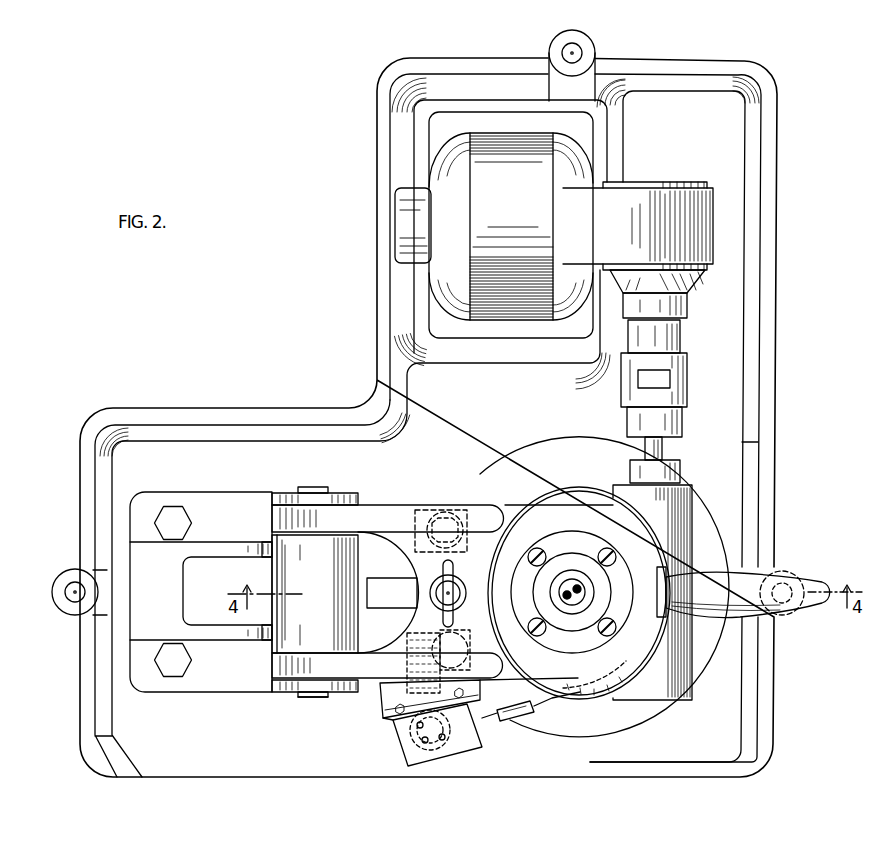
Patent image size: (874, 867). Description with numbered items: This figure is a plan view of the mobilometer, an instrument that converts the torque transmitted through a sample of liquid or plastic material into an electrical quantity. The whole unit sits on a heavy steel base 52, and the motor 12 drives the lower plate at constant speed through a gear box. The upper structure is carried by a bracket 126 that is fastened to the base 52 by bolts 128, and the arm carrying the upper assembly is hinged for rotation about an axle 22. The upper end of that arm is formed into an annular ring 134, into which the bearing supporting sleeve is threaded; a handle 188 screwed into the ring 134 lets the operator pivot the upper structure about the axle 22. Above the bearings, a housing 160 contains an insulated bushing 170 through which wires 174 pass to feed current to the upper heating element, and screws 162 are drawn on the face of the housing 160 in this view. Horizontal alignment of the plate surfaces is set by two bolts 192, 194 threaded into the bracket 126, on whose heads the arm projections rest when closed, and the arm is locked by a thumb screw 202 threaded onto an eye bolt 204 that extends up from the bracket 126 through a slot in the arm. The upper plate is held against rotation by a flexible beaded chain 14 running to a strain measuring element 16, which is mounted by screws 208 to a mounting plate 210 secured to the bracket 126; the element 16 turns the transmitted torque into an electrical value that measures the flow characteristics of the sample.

The motor 12 is at (588, 162).
The flexible beaded chain 14 is at (533, 707).
The strain measuring element 16 is at (483, 737).
The axle 22 is at (303, 704).
The base 52 is at (777, 690).
The bracket 126 is at (247, 497).
The bolts 128 is at (163, 508).
The annular ring 134 is at (640, 557).
The housing 160 is at (588, 598).
The screws 162 is at (607, 548).
The insulated bushing 170 is at (579, 612).
The wires 174 is at (583, 590).
The handle 188 is at (820, 580).
The bolt 192 is at (440, 655).
The bolt 194 is at (444, 514).
The thumb screw 202 is at (440, 587).
The eye bolt 204 is at (432, 611).
The screws 208 is at (398, 738).
The mounting plate 210 is at (385, 714).